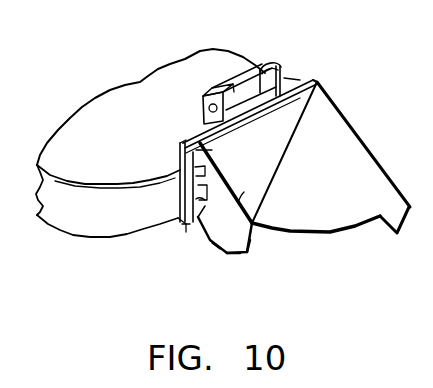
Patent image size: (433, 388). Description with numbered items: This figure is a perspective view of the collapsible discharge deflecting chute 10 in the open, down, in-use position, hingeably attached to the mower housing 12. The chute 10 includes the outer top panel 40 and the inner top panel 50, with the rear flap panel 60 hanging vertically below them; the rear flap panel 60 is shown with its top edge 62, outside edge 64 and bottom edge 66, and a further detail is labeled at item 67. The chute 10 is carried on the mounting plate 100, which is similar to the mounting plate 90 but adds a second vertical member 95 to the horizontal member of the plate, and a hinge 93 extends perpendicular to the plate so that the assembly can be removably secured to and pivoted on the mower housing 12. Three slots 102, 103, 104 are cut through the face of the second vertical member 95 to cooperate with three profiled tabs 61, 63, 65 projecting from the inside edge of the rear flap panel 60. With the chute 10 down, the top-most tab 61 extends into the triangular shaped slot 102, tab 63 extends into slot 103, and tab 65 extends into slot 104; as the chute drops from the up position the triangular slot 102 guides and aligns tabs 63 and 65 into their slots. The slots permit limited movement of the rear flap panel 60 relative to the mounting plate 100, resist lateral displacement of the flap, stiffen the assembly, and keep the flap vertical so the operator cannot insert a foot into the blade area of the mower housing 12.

The collapsible discharge deflecting chute 10 is at (349, 110).
The mower housing 12 is at (126, 147).
The outer top panel 40 is at (344, 190).
The inner top panel 50 is at (291, 135).
The rear flap panel 60 is at (233, 214).
The tab 61 is at (211, 151).
The top edge 62 is at (238, 203).
The tab 63 is at (221, 177).
The outside edge 64 is at (250, 247).
The tab 65 is at (196, 216).
The bottom edge 66 is at (225, 256).
The bracket tab 67 is at (218, 246).
The mounting plate 90 is at (178, 186).
The hinge 93 is at (281, 62).
The second vertical member 95 is at (186, 230).
The mounting plate 100 is at (198, 120).
The slot 102 is at (180, 160).
The slot 103 is at (180, 222).
The slot 104 is at (182, 224).